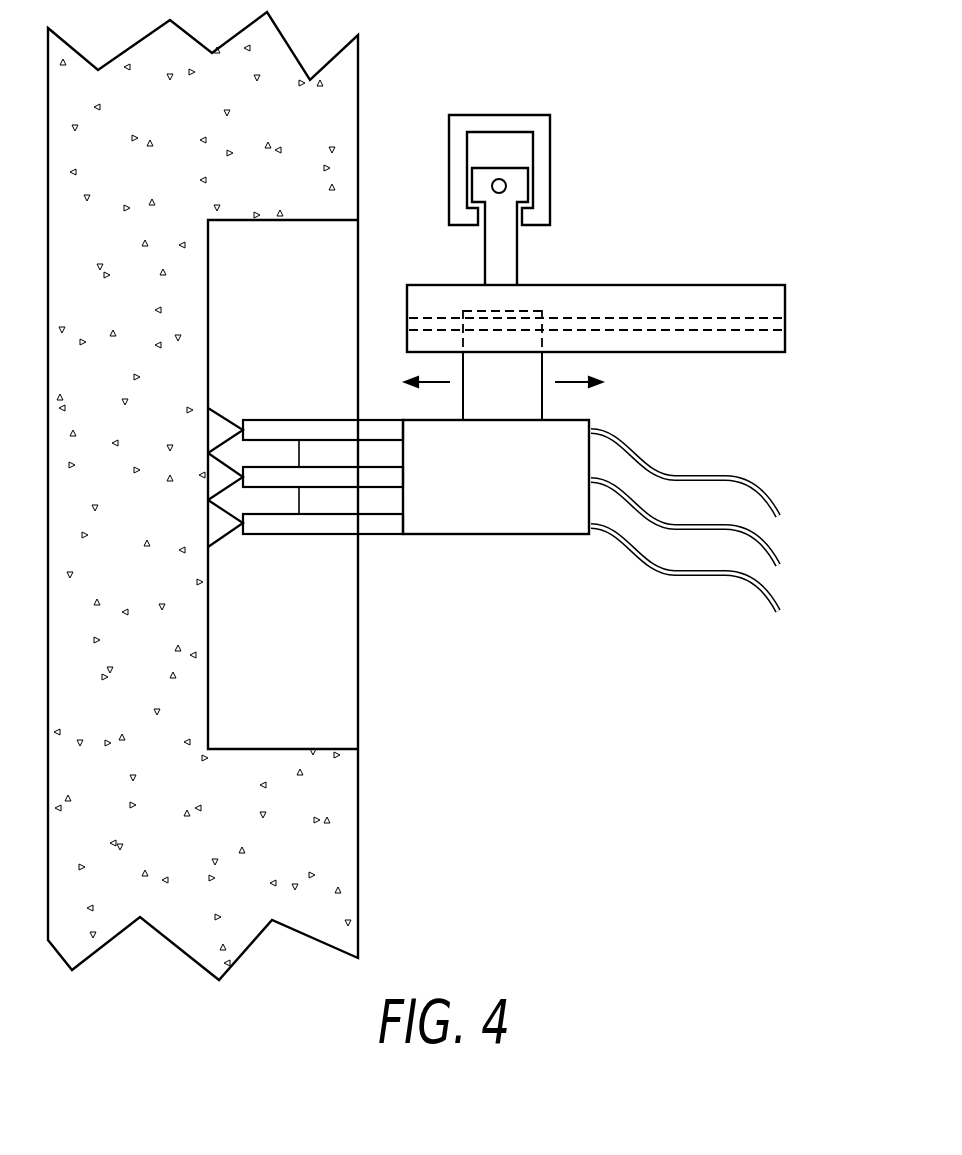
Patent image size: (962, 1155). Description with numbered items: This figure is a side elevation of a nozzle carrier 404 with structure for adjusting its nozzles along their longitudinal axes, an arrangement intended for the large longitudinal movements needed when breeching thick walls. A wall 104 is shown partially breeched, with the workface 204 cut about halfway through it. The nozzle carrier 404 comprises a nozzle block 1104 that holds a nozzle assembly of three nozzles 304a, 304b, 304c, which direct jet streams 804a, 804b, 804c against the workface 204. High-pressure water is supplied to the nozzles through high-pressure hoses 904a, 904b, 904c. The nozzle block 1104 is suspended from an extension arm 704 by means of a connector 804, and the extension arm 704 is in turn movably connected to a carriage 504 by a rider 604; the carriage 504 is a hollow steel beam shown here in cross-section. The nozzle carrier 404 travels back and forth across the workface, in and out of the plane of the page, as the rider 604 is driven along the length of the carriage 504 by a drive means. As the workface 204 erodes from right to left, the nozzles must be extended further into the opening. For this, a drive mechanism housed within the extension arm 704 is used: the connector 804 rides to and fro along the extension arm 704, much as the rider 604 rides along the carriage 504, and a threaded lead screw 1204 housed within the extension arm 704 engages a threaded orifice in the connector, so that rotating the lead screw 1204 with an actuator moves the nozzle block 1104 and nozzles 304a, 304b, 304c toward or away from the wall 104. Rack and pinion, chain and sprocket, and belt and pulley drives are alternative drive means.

The wall 104 is at (358, 806).
The workface 204 is at (208, 713).
The nozzle 304a is at (387, 428).
The nozzle 304b is at (387, 478).
The nozzle 304c is at (386, 537).
The nozzle carrier 404 is at (760, 268).
The carriage 504 is at (552, 123).
The rider 604 is at (517, 253).
The extension arm 704 is at (673, 284).
The connector 804 is at (542, 404).
The jet stream 804a is at (223, 413).
The jet stream 804b is at (230, 488).
The jet stream 804c is at (228, 538).
The high-pressure hose 904a is at (765, 491).
The high-pressure hose 904b is at (773, 546).
The high-pressure hose 904c is at (778, 594).
The nozzle block 1104 is at (506, 184).
The threaded lead screw 1204 is at (762, 317).